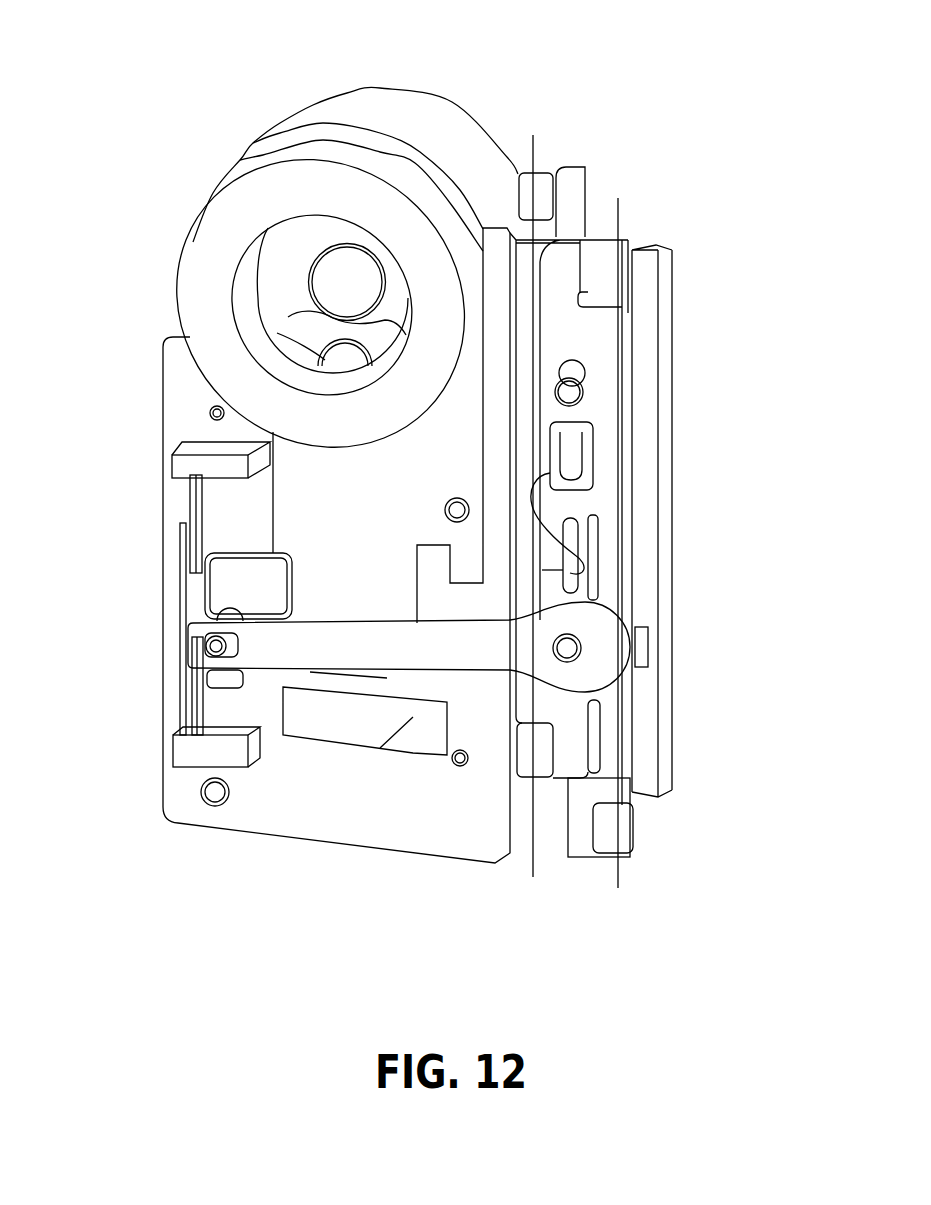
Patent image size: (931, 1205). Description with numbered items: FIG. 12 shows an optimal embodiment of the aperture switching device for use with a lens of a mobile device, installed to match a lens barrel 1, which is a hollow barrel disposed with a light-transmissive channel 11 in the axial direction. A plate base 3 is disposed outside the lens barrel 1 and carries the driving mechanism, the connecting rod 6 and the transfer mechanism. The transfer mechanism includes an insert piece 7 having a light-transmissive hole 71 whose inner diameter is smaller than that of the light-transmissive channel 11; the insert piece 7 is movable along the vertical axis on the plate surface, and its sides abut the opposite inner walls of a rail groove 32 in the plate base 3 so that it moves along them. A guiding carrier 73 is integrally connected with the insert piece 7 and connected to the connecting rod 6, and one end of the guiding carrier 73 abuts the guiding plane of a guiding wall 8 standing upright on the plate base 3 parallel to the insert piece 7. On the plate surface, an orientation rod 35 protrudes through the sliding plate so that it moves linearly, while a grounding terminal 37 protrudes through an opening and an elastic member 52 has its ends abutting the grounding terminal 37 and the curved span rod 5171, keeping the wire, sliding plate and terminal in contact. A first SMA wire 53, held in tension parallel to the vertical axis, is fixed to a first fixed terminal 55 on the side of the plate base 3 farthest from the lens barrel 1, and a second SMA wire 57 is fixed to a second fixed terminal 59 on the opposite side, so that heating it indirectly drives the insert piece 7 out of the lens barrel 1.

The lens barrel 1 is at (319, 261).
The light-transmissive channel 11 is at (332, 272).
The light-transmissive hole 71 is at (337, 347).
The rail groove 32 is at (270, 441).
The insert piece 7 is at (317, 495).
The guiding wall 8 is at (190, 673).
The connecting rod 6 is at (435, 647).
The guiding carrier 73 is at (318, 678).
The plate base 3 is at (665, 530).
The second SMA wire 57 is at (537, 157).
The second fixed terminal 59 is at (577, 190).
The orientation rod 35 is at (569, 389).
The span rod 5171 is at (580, 433).
The elastic member 52 is at (557, 490).
The grounding terminal 37 is at (573, 580).
The first SMA wire 53 is at (618, 748).
The first fixed terminal 55 is at (627, 833).